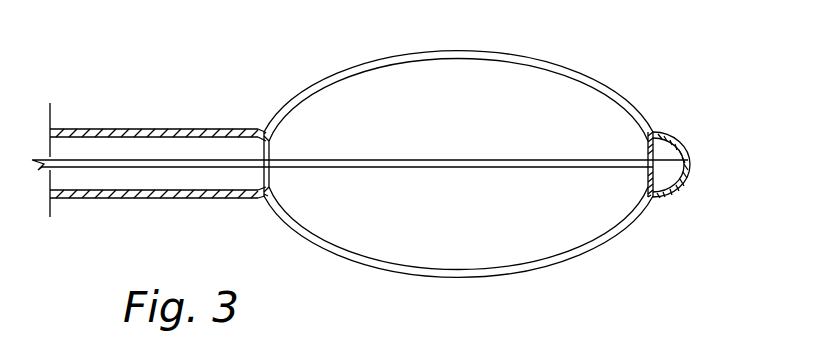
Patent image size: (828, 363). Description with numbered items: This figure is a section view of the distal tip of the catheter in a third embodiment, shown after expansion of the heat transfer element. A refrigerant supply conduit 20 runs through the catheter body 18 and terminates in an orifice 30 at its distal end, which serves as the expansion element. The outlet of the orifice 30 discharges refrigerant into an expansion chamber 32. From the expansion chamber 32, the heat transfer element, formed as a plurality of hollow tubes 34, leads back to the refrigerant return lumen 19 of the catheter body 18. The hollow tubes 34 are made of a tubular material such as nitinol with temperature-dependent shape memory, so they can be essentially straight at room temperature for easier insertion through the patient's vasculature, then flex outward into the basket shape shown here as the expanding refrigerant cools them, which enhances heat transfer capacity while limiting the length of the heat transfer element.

The catheter body 18 is at (147, 130).
The refrigerant return lumen 19 is at (192, 150).
The refrigerant supply conduit 20 is at (98, 159).
The orifice 30 is at (660, 160).
The expansion chamber 32 is at (690, 160).
The hollow tubes 34 is at (459, 50).